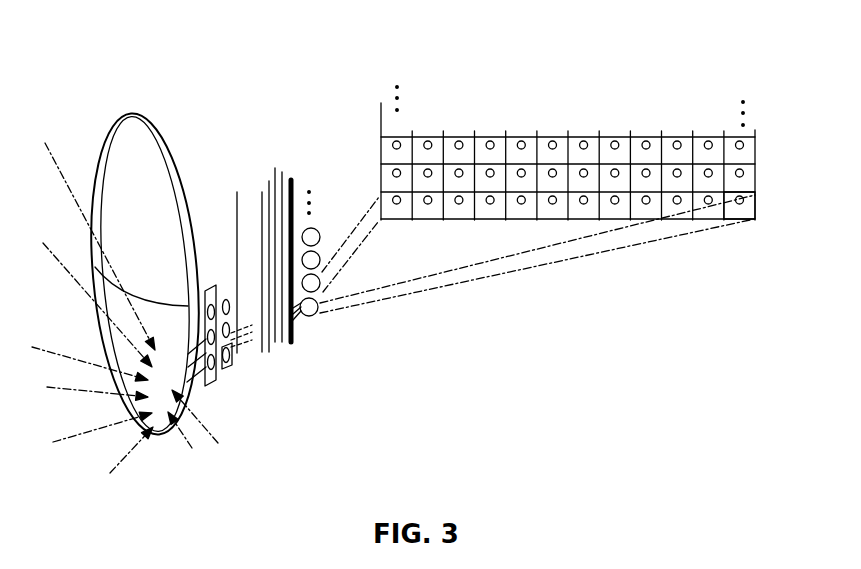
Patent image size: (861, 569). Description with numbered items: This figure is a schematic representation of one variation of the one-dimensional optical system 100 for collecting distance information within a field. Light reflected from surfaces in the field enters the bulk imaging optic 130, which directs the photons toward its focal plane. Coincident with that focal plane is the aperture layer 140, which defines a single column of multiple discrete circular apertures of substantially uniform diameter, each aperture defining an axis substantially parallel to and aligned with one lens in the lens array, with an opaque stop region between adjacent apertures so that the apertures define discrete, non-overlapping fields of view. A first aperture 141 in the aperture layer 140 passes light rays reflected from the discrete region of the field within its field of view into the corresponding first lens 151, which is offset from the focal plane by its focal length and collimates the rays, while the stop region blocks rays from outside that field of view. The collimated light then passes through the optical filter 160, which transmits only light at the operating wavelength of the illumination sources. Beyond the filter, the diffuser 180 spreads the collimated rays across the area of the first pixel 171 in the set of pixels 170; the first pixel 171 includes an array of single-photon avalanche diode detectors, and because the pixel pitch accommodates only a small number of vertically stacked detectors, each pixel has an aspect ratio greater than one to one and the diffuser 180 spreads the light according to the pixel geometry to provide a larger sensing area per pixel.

The one-dimensional optical system 100 is at (638, 46).
The bulk imaging optic 130 is at (170, 434).
The aperture layer 140 is at (211, 376).
The first aperture 141 is at (218, 367).
The first lens 151 is at (231, 364).
The optical filter 160 is at (267, 346).
The set of pixels 170 is at (381, 157).
The first pixel 171 is at (755, 210).
The diffuser 180 is at (315, 316).